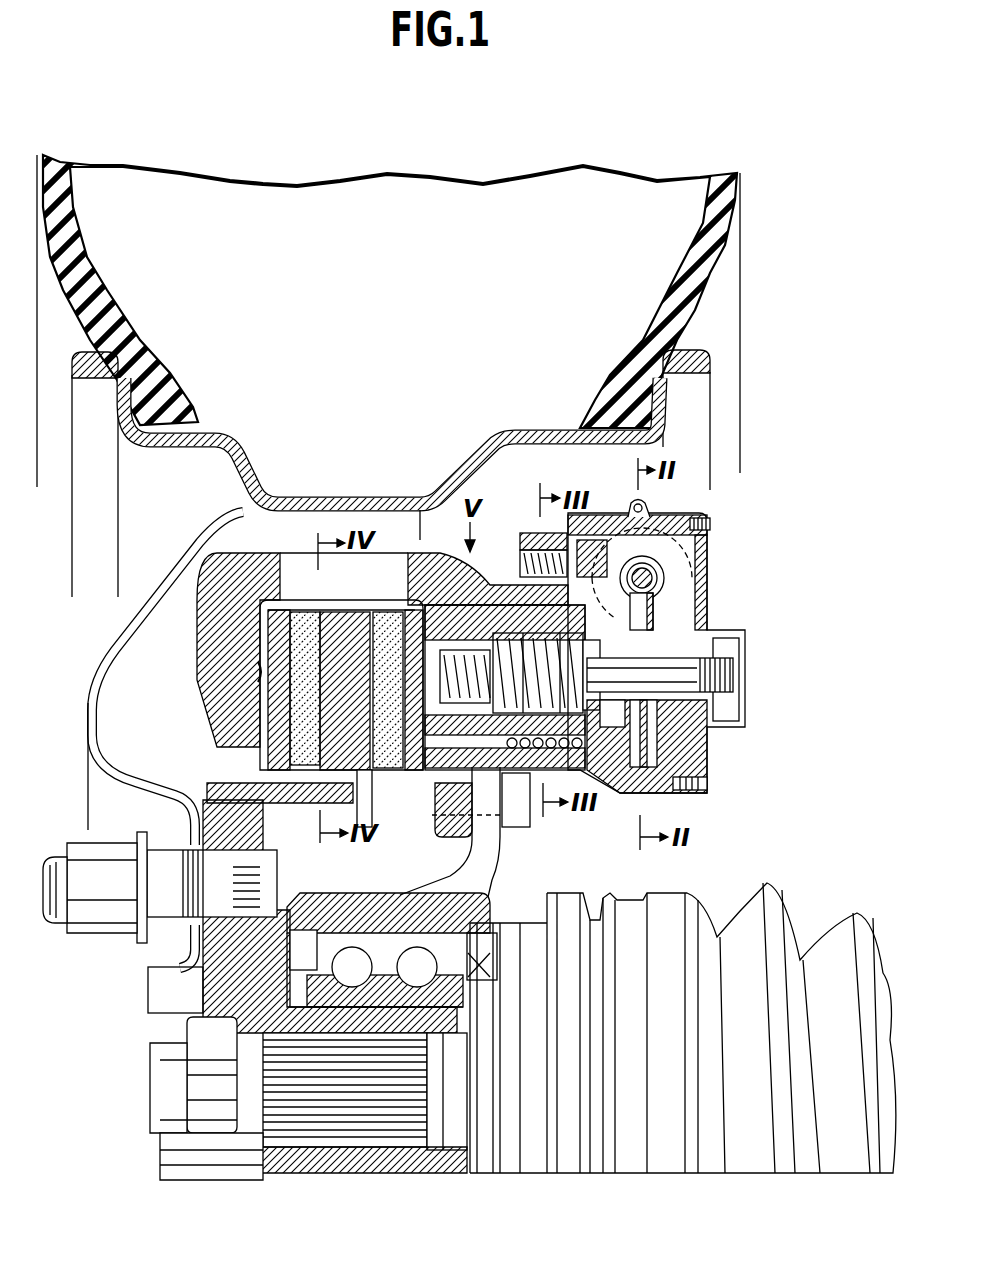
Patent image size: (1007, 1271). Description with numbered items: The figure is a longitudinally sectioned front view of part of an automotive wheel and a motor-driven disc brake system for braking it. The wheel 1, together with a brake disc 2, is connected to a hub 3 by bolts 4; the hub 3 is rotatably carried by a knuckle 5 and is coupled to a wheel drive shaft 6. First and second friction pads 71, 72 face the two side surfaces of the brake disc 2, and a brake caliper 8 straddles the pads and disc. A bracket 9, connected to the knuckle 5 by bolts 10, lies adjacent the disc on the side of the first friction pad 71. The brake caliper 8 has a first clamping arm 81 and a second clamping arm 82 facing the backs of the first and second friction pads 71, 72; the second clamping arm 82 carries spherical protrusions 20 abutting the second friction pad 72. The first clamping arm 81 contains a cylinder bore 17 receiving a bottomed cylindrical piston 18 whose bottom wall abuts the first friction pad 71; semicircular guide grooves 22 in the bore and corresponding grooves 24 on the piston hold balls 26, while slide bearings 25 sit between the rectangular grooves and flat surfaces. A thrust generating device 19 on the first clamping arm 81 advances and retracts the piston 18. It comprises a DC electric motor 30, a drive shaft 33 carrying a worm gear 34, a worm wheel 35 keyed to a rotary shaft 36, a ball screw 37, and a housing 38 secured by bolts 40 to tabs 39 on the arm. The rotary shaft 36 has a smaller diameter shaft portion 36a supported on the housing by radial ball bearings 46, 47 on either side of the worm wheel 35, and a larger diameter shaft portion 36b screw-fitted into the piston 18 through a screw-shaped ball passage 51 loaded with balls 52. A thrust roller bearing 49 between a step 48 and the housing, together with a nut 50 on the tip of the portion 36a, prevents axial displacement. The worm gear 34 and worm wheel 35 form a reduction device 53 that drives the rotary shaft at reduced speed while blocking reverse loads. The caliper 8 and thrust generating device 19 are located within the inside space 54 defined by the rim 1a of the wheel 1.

The wheel 1 is at (112, 653).
The rim 1a is at (527, 437).
The brake disc 2 is at (341, 668).
The hub 3 is at (210, 983).
The bolts 4 is at (183, 852).
The knuckle 5 is at (368, 893).
The wheel drive shaft 6 is at (347, 1133).
The first friction pad 71 is at (392, 620).
The second friction pad 72 is at (303, 620).
The brake caliper 8 is at (362, 650).
The first clamping arm 81 is at (480, 578).
The second clamping arm 82 is at (207, 633).
The bracket 9 is at (413, 807).
The bolts 10 is at (523, 828).
The cylinder bore 17 is at (505, 673).
The piston 18 is at (520, 610).
The thrust generating device 19 is at (715, 510).
The spherical protrusions 20 is at (262, 683).
The semicircular guide grooves 22 is at (453, 810).
The semicircular guide grooves 24 is at (595, 772).
The slide bearings 25 is at (597, 675).
The balls 26 is at (550, 760).
The electric motor 30 is at (710, 526).
The drive shaft 33 is at (650, 517).
The worm gear 34 is at (660, 578).
The worm wheel 35 is at (662, 592).
The rotary shaft 36 is at (736, 665).
The smaller diameter shaft portion 36a is at (691, 675).
The larger diameter shaft portion 36b is at (465, 676).
The ball screw 37 is at (490, 783).
The housing 38 is at (707, 786).
The tabs 39 is at (525, 535).
The bolts 40 is at (618, 517).
The radial ball bearing 46 is at (712, 732).
The radial ball bearing 47 is at (652, 733).
The step 48 is at (660, 675).
The thrust roller bearing 49 is at (600, 727).
The nut 50 is at (710, 632).
The ball passage 51 is at (528, 633).
The balls 52 is at (565, 633).
The reduction device 53 is at (688, 579).
The inside space 54 is at (523, 497).